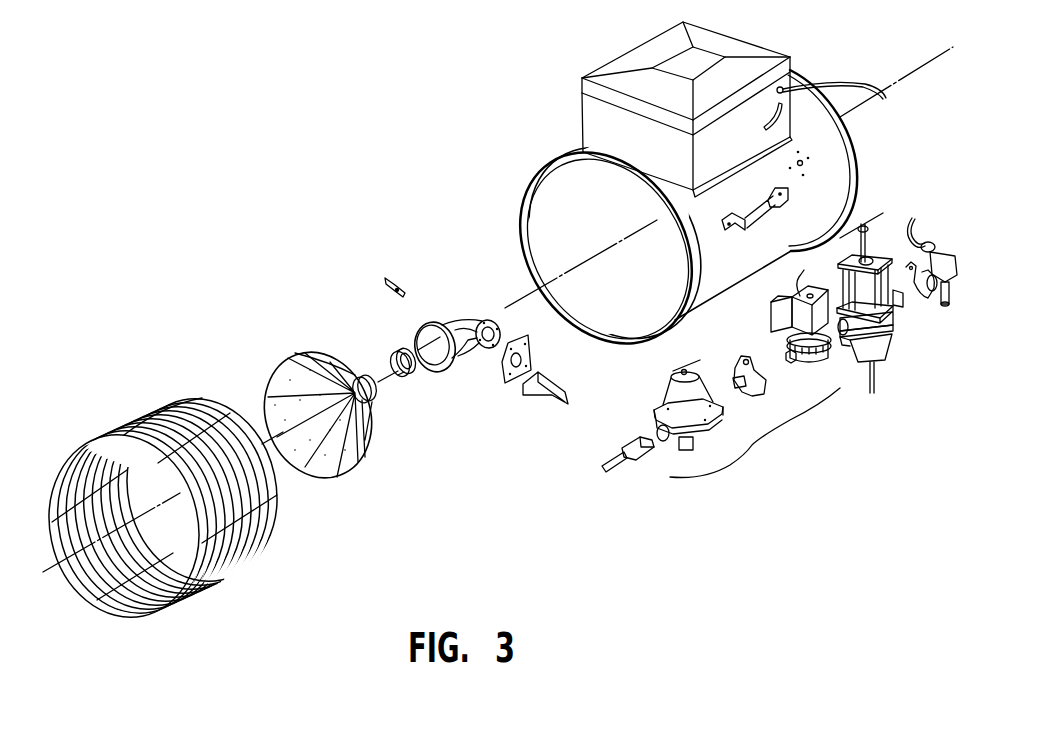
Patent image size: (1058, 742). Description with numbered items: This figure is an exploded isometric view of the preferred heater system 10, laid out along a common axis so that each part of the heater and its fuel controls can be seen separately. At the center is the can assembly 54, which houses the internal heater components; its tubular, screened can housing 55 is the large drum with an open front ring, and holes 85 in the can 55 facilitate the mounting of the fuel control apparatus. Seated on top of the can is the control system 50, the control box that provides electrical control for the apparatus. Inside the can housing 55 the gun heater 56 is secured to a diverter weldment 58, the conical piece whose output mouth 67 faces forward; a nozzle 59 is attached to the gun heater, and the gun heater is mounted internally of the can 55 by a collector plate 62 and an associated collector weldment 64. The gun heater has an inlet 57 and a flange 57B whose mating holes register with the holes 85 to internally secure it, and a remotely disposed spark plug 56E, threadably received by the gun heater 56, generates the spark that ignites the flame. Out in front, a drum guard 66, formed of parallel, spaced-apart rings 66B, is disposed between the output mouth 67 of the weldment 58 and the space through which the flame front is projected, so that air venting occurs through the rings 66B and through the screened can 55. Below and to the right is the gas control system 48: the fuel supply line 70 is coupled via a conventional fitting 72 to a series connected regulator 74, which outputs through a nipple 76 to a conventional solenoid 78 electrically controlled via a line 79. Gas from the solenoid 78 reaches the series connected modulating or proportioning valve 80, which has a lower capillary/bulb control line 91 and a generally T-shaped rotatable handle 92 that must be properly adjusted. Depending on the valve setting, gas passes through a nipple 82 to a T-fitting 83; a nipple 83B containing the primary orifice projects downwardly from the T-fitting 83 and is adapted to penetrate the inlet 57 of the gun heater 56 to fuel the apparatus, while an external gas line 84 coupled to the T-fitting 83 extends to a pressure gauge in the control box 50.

The heater assembly 10 is at (435, 211).
The gas control system 48 is at (755, 433).
The control system 50 is at (643, 43).
The can assembly 54 is at (671, 223).
The tubular can housing 55 is at (537, 232).
The gun heater 56 is at (446, 366).
The spark plug 56E is at (386, 289).
The inlet 57 is at (497, 329).
The flange 57B is at (478, 345).
The diverter weldment 58 is at (291, 364).
The nozzle 59 is at (397, 351).
The collector plate 62 is at (512, 378).
The collector weldment 64 is at (563, 398).
The drum guard 66 is at (218, 586).
The rings 66B is at (157, 404).
The output mouth 67 is at (305, 470).
The fuel supply line 70 is at (613, 465).
The fitting 72 is at (630, 460).
The regulator 74 is at (670, 397).
The nipple 76 is at (741, 392).
The solenoid 78 is at (812, 352).
The line 79 is at (792, 283).
The modulating valve 80 is at (920, 339).
The nipple 82 is at (913, 257).
The T-fitting 83 is at (958, 249).
The nipple 83B is at (950, 306).
The external gas line 84 is at (917, 222).
The holes 85 is at (792, 164).
The capillary/bulb control line 91 is at (874, 379).
The rotatable handle 92 is at (858, 253).